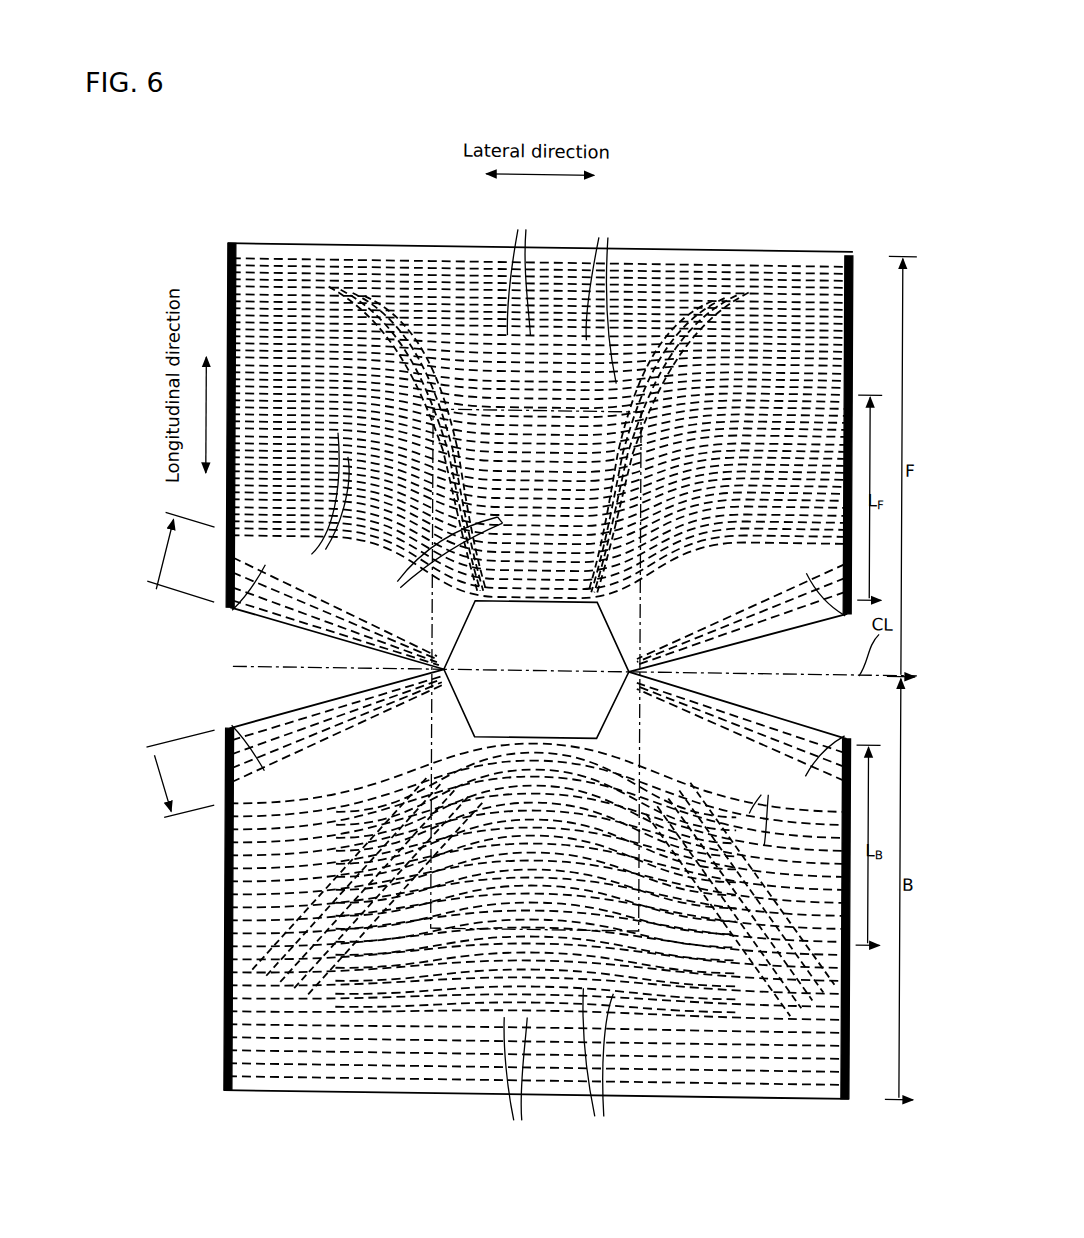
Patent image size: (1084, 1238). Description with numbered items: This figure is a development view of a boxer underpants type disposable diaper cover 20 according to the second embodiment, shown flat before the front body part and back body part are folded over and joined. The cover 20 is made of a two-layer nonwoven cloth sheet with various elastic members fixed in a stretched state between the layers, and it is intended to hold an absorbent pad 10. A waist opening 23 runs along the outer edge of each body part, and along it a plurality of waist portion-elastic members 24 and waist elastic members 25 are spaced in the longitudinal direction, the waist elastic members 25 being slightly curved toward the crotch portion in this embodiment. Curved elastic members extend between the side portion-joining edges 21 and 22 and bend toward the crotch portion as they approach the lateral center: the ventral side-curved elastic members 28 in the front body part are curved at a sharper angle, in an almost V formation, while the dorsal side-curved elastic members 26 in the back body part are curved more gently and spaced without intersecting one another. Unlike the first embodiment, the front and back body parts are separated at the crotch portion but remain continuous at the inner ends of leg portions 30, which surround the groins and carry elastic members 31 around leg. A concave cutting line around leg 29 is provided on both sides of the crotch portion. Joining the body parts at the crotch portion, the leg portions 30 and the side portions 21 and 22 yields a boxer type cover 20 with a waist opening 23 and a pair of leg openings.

The absorbent pad 10 is at (650, 590).
The underpants type disposable diaper cover 20 is at (673, 238).
The side portion-joining edge 21 is at (233, 248).
The side portion-joining edge 22 is at (233, 1084).
The waist opening 23 is at (440, 240).
The waist portion-elastic members 24 is at (519, 676).
The waist elastic members 25 is at (532, 677).
The dorsal side-curved elastic members 26 is at (698, 882).
The ventral side-curved elastic members 28 is at (402, 578).
The cutting line around leg 29 is at (318, 631).
The leg portions 30 is at (177, 665).
The elastic members around leg 31 is at (262, 602).